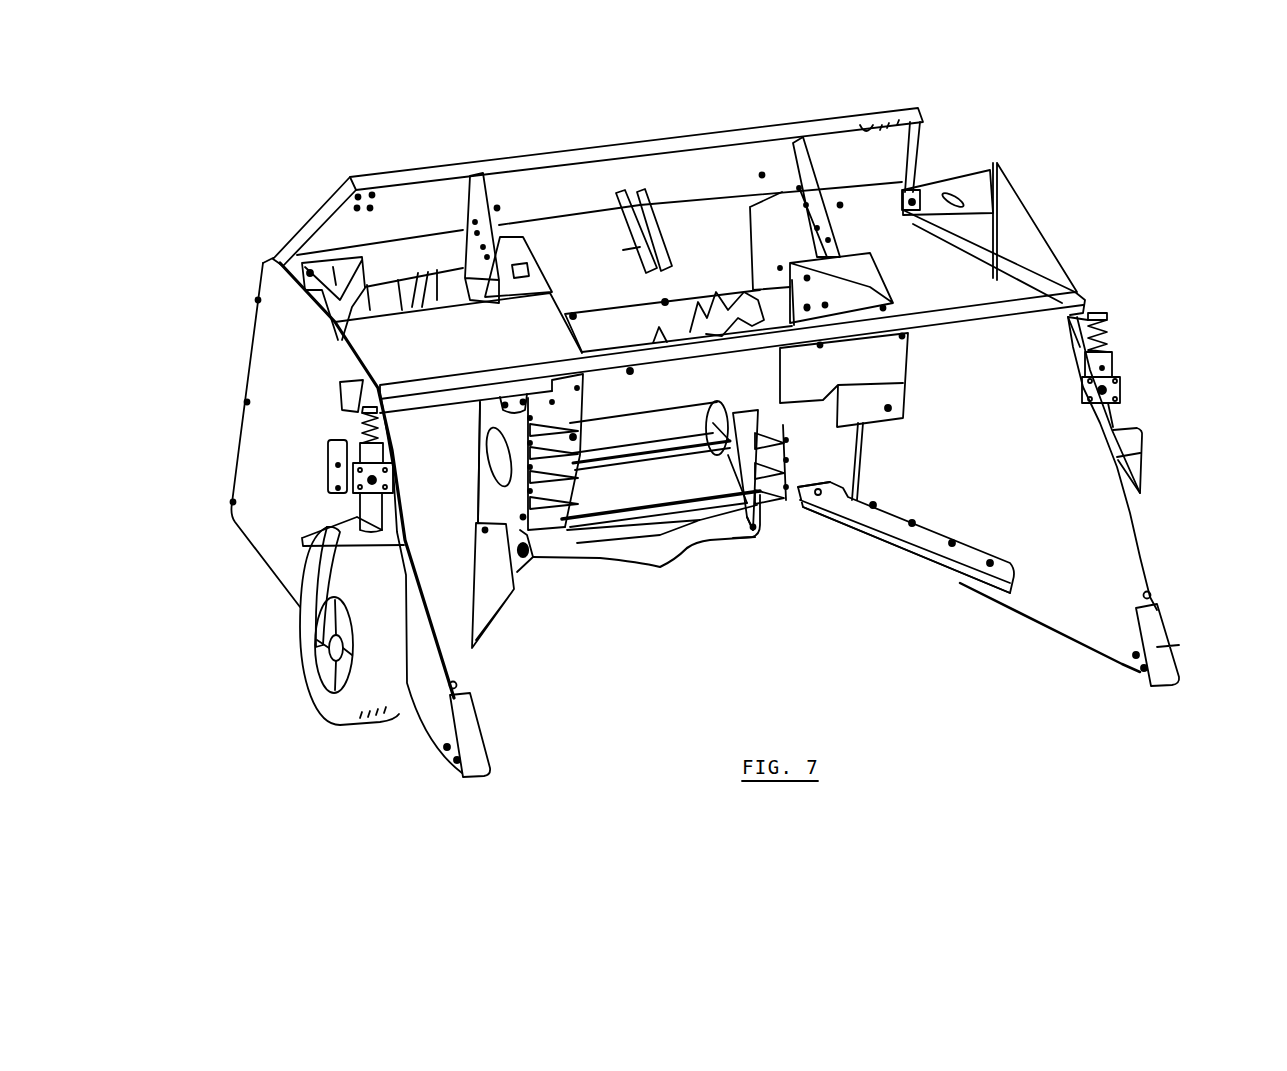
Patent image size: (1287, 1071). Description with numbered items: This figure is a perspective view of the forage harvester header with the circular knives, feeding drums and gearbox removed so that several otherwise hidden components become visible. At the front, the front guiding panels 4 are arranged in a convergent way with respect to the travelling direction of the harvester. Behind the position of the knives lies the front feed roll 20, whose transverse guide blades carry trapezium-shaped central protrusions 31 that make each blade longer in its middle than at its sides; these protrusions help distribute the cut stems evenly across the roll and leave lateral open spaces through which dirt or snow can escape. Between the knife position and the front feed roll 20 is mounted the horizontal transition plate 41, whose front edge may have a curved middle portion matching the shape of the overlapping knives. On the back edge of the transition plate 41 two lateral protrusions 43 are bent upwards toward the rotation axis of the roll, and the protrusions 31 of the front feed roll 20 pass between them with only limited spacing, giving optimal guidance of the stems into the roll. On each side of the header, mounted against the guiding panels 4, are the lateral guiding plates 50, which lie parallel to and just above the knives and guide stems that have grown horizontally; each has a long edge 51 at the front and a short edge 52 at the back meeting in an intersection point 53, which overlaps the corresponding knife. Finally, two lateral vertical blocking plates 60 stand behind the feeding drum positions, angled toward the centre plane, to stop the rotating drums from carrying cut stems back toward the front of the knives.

The front guiding panels 4 is at (425, 675).
The front feed roll 20 is at (643, 495).
The central protrusion 31 is at (652, 522).
The horizontal transition plate 41 is at (662, 567).
The lateral protrusions 43 is at (553, 547).
The lateral guiding plates 50 is at (483, 587).
The long edge 51 is at (932, 550).
The short edge 52 is at (837, 517).
The intersection point 53 is at (862, 533).
The lateral vertical blocking plates 60 is at (563, 498).